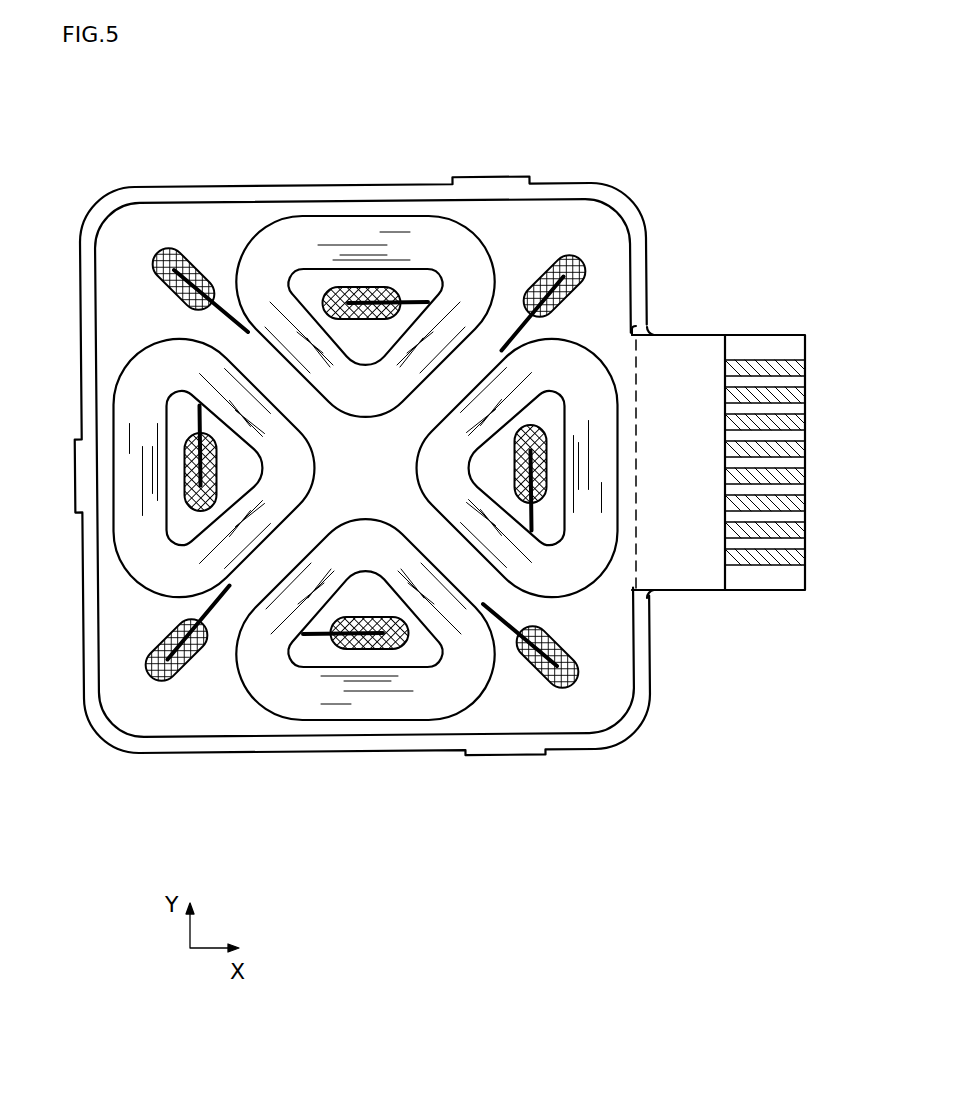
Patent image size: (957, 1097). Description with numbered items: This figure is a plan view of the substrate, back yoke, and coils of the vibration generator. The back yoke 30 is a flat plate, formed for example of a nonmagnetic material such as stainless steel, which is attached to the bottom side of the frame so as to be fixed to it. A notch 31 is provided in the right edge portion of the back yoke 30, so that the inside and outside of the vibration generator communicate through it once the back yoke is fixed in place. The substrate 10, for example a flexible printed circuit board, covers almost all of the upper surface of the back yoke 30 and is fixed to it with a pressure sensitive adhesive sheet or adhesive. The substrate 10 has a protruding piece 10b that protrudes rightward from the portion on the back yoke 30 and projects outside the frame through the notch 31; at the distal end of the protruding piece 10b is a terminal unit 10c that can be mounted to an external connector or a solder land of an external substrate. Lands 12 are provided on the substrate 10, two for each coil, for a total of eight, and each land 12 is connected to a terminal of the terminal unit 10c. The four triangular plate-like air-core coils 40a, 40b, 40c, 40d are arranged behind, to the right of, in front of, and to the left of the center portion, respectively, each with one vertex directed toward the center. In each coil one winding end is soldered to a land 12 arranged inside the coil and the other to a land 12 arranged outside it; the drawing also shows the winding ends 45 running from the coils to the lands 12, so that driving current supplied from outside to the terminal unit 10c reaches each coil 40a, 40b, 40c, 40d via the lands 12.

The substrate 10 is at (573, 735).
The protruding piece 10b is at (715, 353).
The terminal unit 10c is at (765, 390).
The land 12 is at (565, 262).
The back yoke 30 is at (364, 746).
The notch 31 is at (643, 327).
The coil 40a is at (264, 248).
The coil 40b is at (565, 573).
The coil 40c is at (437, 700).
The coil 40d is at (132, 410).
The wiring conductors 45 is at (497, 627).